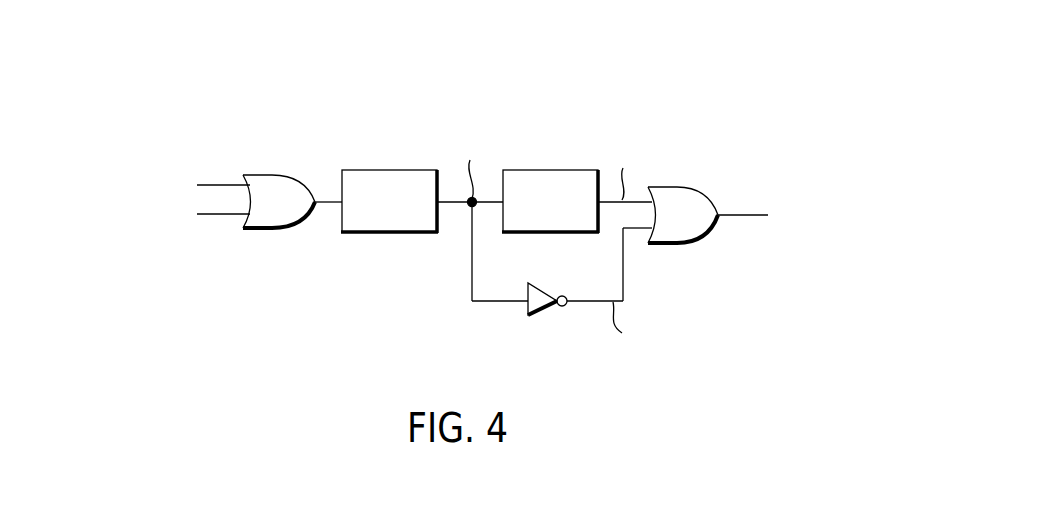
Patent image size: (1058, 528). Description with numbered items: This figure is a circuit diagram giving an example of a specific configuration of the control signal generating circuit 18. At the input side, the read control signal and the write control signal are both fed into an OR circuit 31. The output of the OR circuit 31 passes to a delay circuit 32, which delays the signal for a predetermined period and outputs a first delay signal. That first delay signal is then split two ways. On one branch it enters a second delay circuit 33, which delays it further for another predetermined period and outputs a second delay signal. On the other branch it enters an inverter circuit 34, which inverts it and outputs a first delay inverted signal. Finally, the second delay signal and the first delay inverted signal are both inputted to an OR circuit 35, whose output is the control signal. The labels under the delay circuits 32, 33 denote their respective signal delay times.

The control signal generating circuit 18 is at (459, 84).
The OR circuit 31 is at (272, 174).
The delay circuit 32 is at (378, 170).
The delay circuit 33 is at (558, 170).
The inverter circuit 34 is at (540, 318).
The OR circuit 35 is at (697, 245).